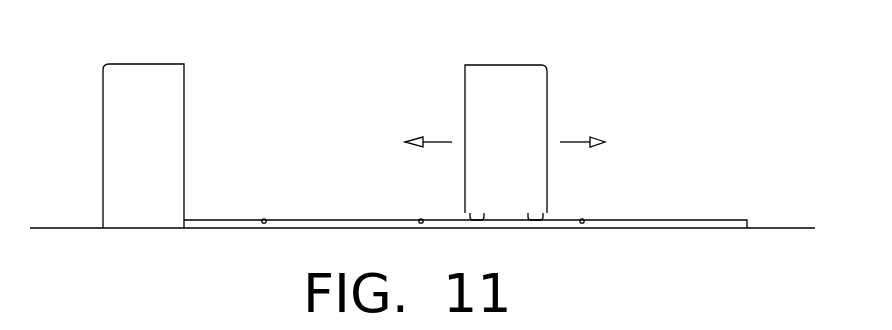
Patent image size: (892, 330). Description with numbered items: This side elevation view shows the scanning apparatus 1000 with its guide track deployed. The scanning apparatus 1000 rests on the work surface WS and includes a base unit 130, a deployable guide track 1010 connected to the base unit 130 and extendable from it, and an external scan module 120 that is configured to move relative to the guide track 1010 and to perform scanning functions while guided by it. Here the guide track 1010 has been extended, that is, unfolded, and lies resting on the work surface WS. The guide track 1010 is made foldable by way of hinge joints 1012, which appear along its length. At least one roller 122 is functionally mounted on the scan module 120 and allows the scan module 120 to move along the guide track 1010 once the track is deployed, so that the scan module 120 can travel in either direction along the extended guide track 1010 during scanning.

The scanning apparatus 1000 is at (662, 43).
The base unit 130 is at (142, 78).
The external scan module 120 is at (475, 86).
The roller 122 is at (539, 213).
The deployable guide track 1010 is at (222, 228).
The hinge joints 1012 is at (264, 219).
The work surface WS is at (778, 228).